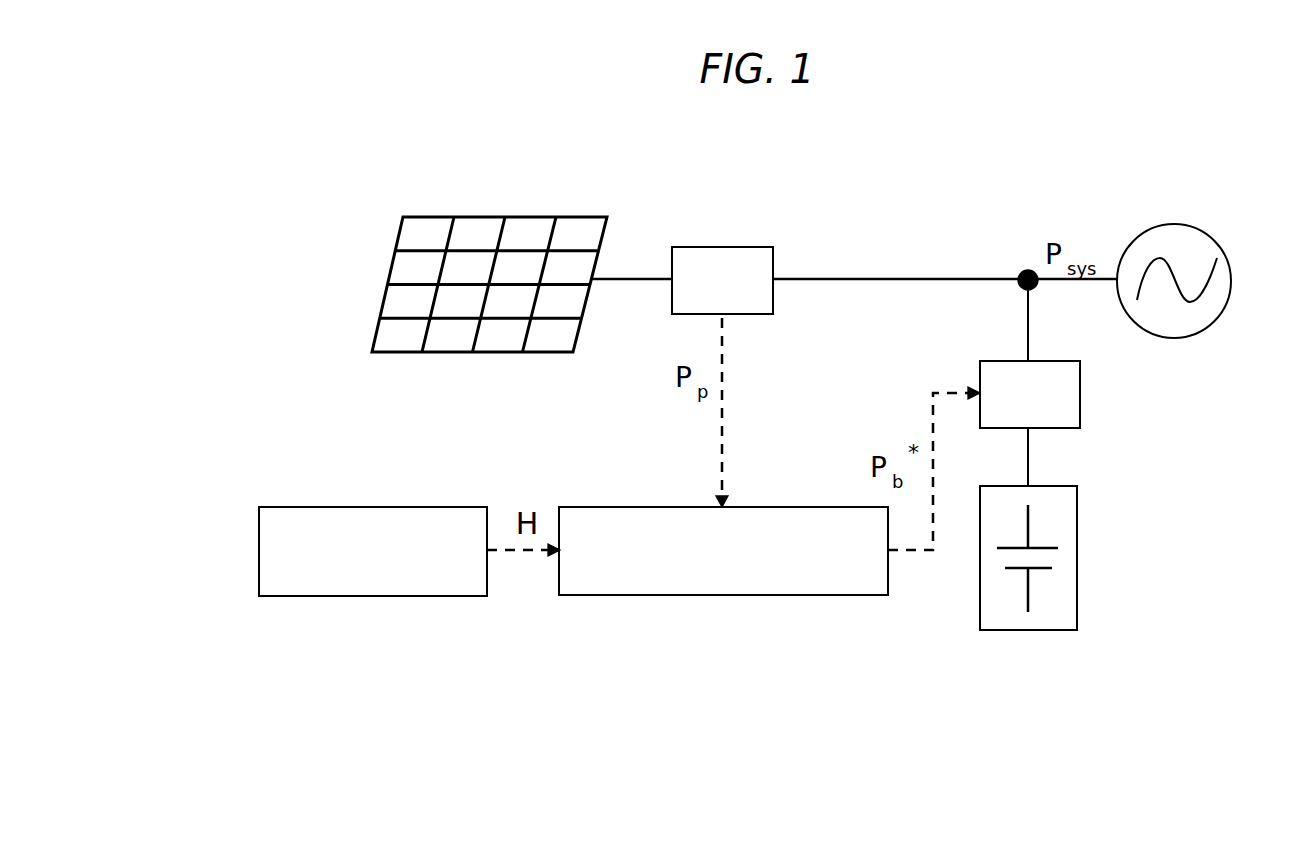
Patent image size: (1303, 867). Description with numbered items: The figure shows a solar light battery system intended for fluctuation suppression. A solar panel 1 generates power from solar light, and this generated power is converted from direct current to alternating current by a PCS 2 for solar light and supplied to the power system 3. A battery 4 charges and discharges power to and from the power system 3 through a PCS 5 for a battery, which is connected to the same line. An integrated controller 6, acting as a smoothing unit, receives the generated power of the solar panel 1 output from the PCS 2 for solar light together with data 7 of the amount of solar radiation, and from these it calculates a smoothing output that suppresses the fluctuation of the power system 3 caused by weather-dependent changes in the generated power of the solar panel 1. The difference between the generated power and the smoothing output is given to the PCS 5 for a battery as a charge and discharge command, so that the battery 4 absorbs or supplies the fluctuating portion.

The solar panel 1 is at (470, 217).
The PCS for solar light 2 is at (695, 247).
The power system 3 is at (1175, 224).
The battery 4 is at (1080, 588).
The PCS for a battery 5 is at (1085, 418).
The integrated controller 6 is at (680, 596).
The data of the amount of solar radiation 7 is at (322, 596).